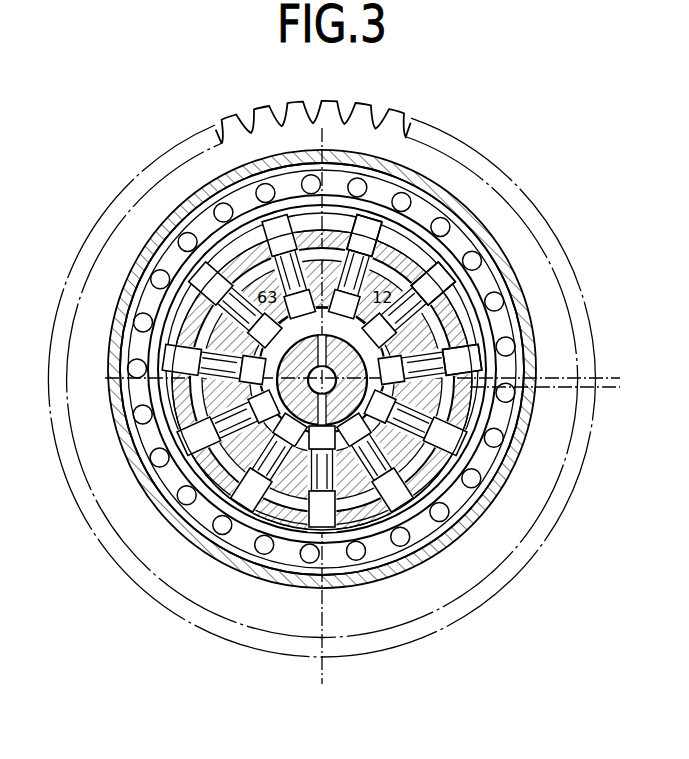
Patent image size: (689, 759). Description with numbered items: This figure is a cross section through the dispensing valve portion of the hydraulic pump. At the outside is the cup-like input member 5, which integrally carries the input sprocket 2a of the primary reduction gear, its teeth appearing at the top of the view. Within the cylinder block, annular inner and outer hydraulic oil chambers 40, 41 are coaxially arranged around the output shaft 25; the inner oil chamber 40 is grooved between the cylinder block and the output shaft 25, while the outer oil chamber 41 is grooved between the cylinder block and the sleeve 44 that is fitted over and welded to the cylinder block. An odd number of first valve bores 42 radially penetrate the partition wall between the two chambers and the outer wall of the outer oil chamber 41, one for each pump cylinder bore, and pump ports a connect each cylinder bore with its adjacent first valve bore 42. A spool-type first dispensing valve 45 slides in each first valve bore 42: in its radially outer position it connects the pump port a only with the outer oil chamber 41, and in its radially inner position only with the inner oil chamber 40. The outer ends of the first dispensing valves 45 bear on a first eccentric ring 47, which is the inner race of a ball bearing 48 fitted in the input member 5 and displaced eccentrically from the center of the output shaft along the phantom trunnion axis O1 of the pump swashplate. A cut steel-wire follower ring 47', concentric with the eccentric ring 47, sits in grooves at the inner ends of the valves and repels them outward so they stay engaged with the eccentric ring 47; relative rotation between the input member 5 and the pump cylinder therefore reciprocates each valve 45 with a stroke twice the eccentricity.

The input sprocket 2a is at (399, 121).
The input member 5 is at (478, 222).
The output shaft 25 is at (425, 468).
The inner hydraulic oil chamber 40 is at (460, 333).
The outer hydraulic oil chamber 41 is at (460, 315).
The first valve bore 42 is at (378, 210).
The sleeve 44 is at (402, 255).
The first dispensing valve 45 is at (277, 208).
The first eccentric ring 47 is at (331, 369).
The follower ring 47' is at (346, 369).
The ball bearing 48 is at (306, 172).
The pump port a is at (446, 318).
The phantom trunnion axis O1 is at (322, 684).